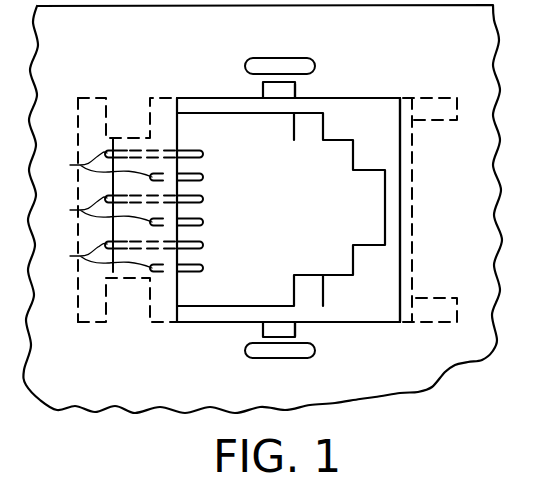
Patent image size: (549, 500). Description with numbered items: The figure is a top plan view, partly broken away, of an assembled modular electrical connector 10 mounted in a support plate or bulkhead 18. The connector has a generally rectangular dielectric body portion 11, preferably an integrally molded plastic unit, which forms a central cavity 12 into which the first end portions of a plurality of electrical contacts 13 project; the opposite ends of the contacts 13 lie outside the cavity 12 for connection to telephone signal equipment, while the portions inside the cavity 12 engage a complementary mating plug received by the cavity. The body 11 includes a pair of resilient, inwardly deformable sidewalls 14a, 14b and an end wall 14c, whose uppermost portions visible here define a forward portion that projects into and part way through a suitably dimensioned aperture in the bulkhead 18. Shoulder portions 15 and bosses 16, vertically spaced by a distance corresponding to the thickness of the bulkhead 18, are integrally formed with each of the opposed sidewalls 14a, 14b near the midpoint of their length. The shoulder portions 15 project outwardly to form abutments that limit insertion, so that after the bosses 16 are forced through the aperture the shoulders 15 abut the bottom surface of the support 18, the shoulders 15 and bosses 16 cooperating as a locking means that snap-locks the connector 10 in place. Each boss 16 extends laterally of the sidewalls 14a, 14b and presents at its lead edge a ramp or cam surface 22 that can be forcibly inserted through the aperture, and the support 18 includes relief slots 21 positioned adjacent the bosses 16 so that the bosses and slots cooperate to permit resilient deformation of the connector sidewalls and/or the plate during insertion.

The modular electrical connector 10 is at (369, 77).
The dielectric body portion 11 is at (381, 110).
The central cavity 12 is at (290, 224).
The electrical contacts 13 is at (126, 205).
The sidewall 14a is at (211, 93).
The sidewall 14b is at (180, 325).
The end wall 14c is at (405, 240).
The shoulder portions 15 is at (164, 98).
The bosses 16 is at (296, 89).
The support plate or bulkhead 18 is at (258, 36).
The relief slots 21 is at (297, 38).
The ramp or cam surface 22 is at (264, 87).